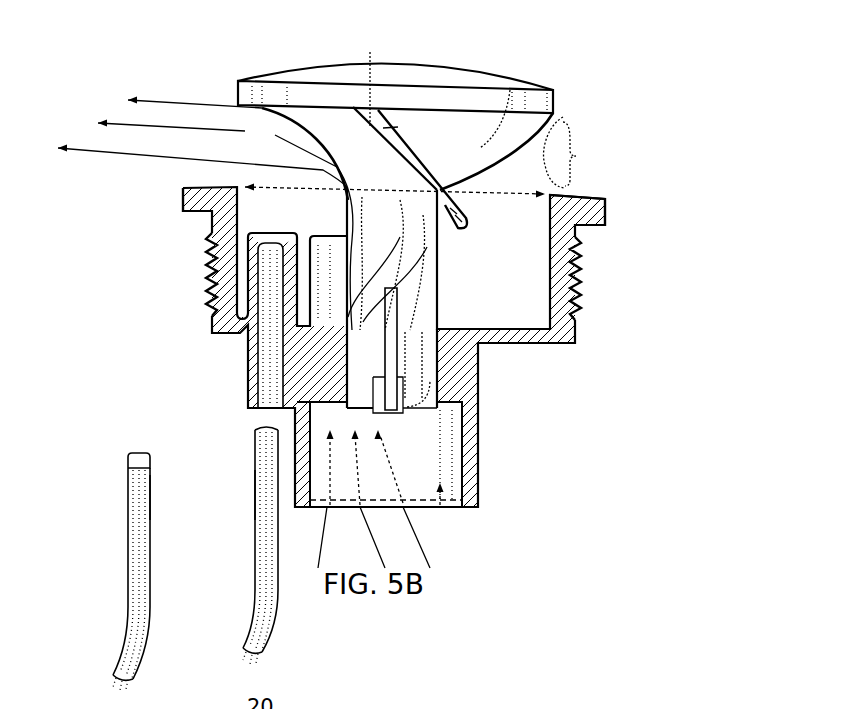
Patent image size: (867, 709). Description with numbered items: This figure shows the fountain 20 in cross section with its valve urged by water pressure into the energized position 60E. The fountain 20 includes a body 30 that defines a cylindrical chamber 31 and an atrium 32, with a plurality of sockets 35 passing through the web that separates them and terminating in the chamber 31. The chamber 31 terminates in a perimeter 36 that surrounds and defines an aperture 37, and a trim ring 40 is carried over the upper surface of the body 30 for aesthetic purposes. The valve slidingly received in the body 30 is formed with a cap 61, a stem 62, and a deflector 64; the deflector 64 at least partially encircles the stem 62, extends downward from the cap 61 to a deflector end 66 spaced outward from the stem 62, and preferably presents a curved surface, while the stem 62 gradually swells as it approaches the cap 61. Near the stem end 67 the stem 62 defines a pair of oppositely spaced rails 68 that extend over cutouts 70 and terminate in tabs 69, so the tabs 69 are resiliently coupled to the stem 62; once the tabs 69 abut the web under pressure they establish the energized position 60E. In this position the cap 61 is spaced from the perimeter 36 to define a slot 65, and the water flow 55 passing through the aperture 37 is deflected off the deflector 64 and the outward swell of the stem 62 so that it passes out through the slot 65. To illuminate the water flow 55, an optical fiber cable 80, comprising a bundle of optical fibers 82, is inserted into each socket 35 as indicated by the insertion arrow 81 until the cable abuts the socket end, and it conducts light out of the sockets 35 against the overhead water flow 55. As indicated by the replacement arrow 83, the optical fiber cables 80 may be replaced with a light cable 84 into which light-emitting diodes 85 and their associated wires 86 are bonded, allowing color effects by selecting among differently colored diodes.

The fountain 20 is at (172, 260).
The body 30 is at (573, 350).
The chamber 31 is at (527, 320).
The atrium 32 is at (450, 510).
The sockets 35 is at (213, 275).
The perimeter 36 is at (565, 118).
The aperture 37 is at (395, 195).
The trim ring 40 is at (598, 205).
The water flow 55 is at (251, 333).
The energized position 60E is at (510, 62).
The cap 61 is at (533, 85).
The stem 62 is at (503, 93).
The deflector 64 is at (370, 79).
The slot 65 is at (577, 156).
The deflector end 66 is at (470, 233).
The stem end 67 is at (473, 413).
The rails 68 is at (443, 305).
The tabs 69 is at (455, 375).
The cutouts 70 is at (447, 317).
The optical fiber cable 80 is at (238, 536).
The insertion arrow 81 is at (267, 424).
The optical fibers 82 is at (243, 650).
The replacement arrow 83 is at (240, 508).
The light cable 84 is at (115, 545).
The light-emitting diodes 85 is at (130, 466).
The wires 86 is at (113, 678).